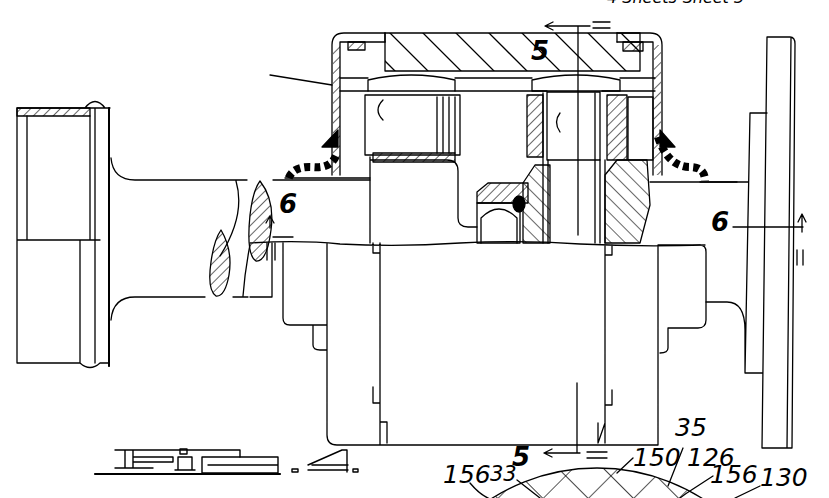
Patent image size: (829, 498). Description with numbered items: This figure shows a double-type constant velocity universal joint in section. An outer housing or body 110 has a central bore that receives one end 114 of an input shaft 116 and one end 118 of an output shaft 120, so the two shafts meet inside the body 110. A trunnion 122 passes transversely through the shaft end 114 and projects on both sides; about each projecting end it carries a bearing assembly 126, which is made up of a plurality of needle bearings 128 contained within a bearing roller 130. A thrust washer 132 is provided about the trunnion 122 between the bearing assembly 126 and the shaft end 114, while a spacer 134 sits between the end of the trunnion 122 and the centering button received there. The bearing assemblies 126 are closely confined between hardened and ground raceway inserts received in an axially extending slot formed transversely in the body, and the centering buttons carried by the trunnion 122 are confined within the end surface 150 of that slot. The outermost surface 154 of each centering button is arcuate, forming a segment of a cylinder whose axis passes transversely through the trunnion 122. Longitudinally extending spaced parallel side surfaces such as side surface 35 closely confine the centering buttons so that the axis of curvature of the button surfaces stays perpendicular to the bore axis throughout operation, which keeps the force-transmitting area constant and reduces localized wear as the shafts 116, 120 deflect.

The outer housing or body 110 is at (499, 49).
The end of input shaft 114 is at (627, 243).
The input shaft 116 is at (718, 190).
The end of output shaft 118 is at (430, 230).
The output shaft 120 is at (173, 180).
The trunnion 122 is at (590, 210).
The bearing assembly 126 is at (355, 109).
The needle bearing 128 is at (527, 100).
The bearing roller 130 is at (530, 132).
The thrust washer 132 is at (390, 160).
The spacer 134 is at (492, 117).
The end surface of slot 150 is at (350, 80).
The outer surface of centering button 154 is at (380, 62).
The side surface 35 is at (284, 71).